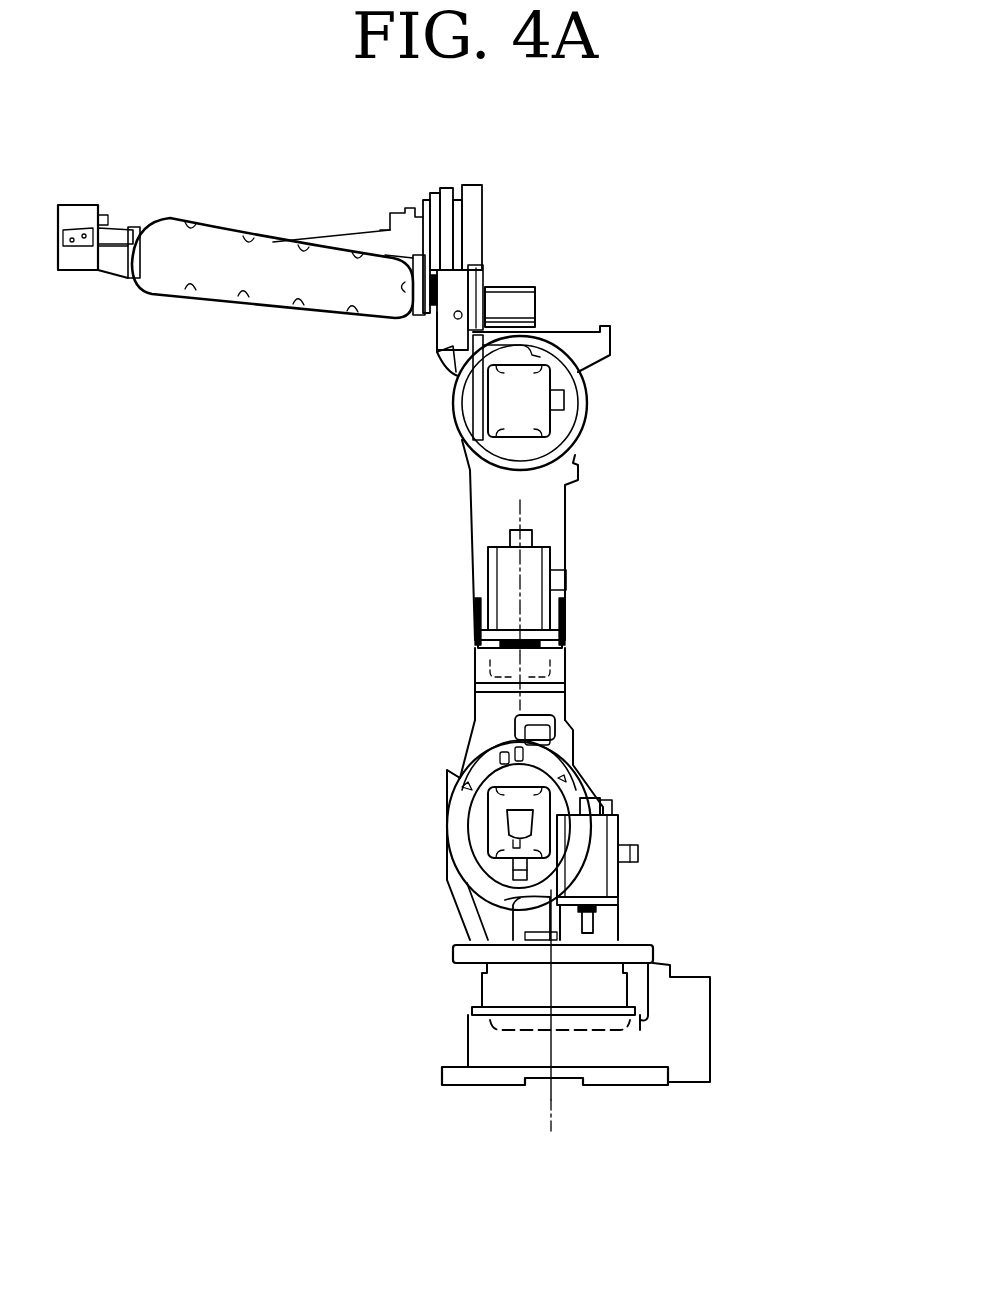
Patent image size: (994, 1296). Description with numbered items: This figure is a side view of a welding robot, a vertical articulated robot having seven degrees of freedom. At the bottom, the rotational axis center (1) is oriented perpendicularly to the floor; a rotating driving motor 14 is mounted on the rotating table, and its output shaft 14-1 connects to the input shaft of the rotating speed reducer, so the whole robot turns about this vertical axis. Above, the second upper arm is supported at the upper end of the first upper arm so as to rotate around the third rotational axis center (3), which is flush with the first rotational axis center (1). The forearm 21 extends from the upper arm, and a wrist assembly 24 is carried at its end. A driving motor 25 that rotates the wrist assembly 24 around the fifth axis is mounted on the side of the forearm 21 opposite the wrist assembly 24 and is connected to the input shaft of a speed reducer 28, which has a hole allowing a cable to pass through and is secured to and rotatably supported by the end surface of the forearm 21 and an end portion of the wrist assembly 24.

The wrist assembly 24 is at (125, 237).
The forearm 21 is at (273, 267).
The speed reducer 28 is at (430, 200).
The driving motor 25 is at (513, 317).
The third rotational axis center 3 is at (513, 508).
The rotating driving motor 14 is at (603, 848).
The output shaft 14-1 is at (597, 923).
The rotational axis center 1 is at (576, 1028).